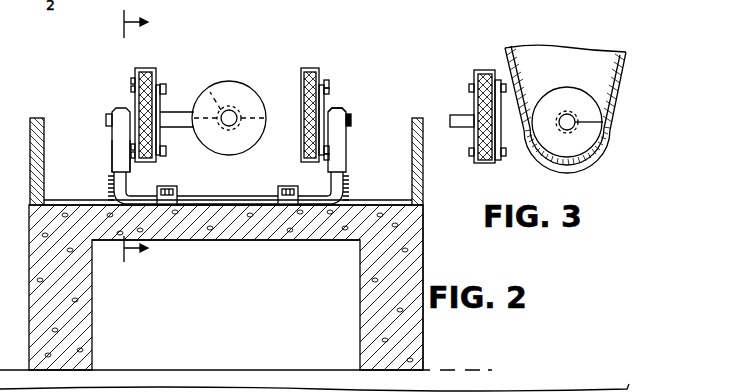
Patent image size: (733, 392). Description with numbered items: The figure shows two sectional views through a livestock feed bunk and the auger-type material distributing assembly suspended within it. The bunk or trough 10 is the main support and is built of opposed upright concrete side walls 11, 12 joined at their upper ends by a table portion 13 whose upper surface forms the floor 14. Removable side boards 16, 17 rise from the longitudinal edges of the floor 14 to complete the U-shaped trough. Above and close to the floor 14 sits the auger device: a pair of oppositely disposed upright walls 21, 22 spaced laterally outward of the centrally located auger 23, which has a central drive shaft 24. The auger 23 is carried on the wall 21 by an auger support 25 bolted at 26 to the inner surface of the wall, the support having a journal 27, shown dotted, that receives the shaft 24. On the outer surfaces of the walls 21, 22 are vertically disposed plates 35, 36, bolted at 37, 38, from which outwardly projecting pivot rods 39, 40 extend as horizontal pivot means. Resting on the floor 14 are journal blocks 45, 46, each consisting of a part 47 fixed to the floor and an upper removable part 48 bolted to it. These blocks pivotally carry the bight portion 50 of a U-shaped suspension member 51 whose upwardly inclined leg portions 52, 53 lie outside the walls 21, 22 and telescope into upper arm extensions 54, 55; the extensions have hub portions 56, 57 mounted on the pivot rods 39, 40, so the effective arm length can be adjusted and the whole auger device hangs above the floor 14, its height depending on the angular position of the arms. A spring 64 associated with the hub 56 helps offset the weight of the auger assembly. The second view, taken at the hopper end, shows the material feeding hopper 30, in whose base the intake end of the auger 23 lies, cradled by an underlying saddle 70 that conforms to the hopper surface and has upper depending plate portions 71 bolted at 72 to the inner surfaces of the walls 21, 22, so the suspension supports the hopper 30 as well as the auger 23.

In FIG. 2, the bunk or trough 10 is at (452, 227).
In FIG. 2, the concrete side wall 11 is at (93, 282).
In FIG. 2, the concrete side wall 12 is at (421, 333).
In FIG. 2, the table portion 13 is at (235, 241).
In FIG. 2, the floor 14 is at (352, 205).
In FIG. 2, the side board 16 is at (38, 118).
In FIG. 2, the side board 17 is at (423, 188).
In FIG. 2, the upright wall 21 is at (148, 68).
In FIG. 3, the upright wall 21 is at (488, 70).
In FIG. 2, the upright wall 22 is at (307, 68).
In FIG. 2, the auger 23 is at (221, 90).
In FIG. 3, the auger 23 is at (566, 88).
In FIG. 2, the auger drive shaft 24 is at (237, 114).
In FIG. 3, the auger drive shaft 24 is at (575, 116).
In FIG. 2, the auger support 25 is at (174, 112).
In FIG. 2, the bolt 26 is at (166, 85).
In FIG. 2, the journal 27 is at (235, 98).
In FIG. 3, the material feeding hopper 30 is at (512, 52).
In FIG. 2, the plate 35 is at (131, 88).
In FIG. 3, the plate 35 is at (472, 82).
In FIG. 2, the plate 36 is at (329, 90).
In FIG. 2, the bolt 37 is at (132, 79).
In FIG. 2, the bolt 38 is at (327, 80).
In FIG. 2, the pivot rod 39 is at (106, 118).
In FIG. 3, the pivot rod 39 is at (455, 127).
In FIG. 2, the pivot rod 40 is at (352, 119).
In FIG. 2, the journal block 45 is at (181, 186).
In FIG. 2, the journal block 46 is at (289, 184).
In FIG. 2, the fixed part 47 is at (196, 197).
In FIG. 2, the removable part 48 is at (162, 186).
In FIG. 2, the bight portion 50 is at (207, 206).
In FIG. 2, the U-shaped suspension member 51 is at (308, 195).
In FIG. 2, the leg portion 52 is at (116, 184).
In FIG. 2, the leg portion 53 is at (345, 182).
In FIG. 2, the upper arm extension 54 is at (113, 151).
In FIG. 2, the upper arm extension 55 is at (340, 153).
In FIG. 2, the hub portion 56 is at (124, 108).
In FIG. 2, the hub portion 57 is at (342, 108).
In FIG. 2, the spring 64 is at (108, 198).
In FIG. 3, the saddle 70 is at (567, 166).
In FIG. 3, the plate portion 71 is at (505, 128).
In FIG. 3, the bolt 72 is at (503, 92).